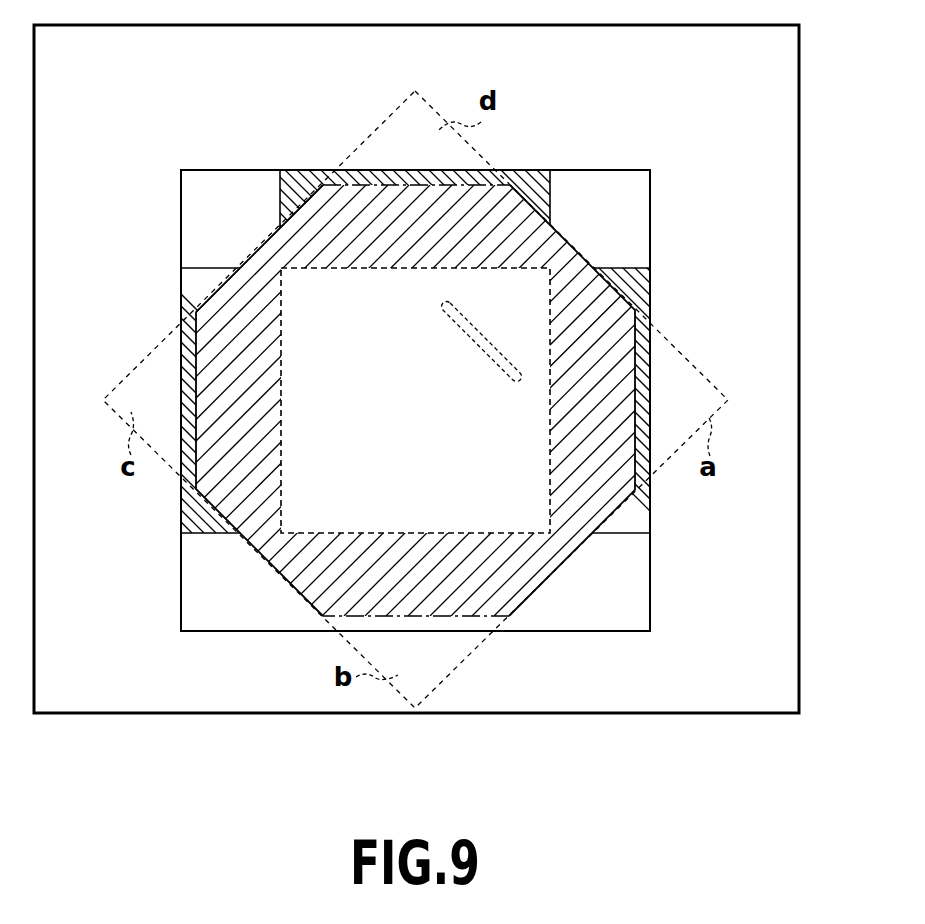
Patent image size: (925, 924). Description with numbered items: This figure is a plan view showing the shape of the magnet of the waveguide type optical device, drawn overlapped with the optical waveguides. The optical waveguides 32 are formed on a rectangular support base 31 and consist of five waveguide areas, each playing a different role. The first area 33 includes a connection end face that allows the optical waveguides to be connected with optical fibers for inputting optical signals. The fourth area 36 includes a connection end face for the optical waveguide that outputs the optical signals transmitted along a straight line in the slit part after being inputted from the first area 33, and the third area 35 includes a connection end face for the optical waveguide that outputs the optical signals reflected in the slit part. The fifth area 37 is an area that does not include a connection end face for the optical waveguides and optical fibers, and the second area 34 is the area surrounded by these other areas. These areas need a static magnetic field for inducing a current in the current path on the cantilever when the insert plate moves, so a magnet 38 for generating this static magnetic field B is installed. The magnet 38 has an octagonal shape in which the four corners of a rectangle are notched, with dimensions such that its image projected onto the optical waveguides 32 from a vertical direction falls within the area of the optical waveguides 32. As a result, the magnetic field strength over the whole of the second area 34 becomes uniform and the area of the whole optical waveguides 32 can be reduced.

The support base for optical waveguides 31 is at (799, 158).
The optical waveguides 32 is at (630, 170).
The Area 1 33 is at (181, 279).
The Area 2 34 is at (490, 475).
The Area 3 35 is at (295, 170).
The Area 4 36 is at (645, 283).
The Area 5 37 is at (585, 612).
The magnet 38 is at (620, 320).
The static magnetic field B is at (481, 341).